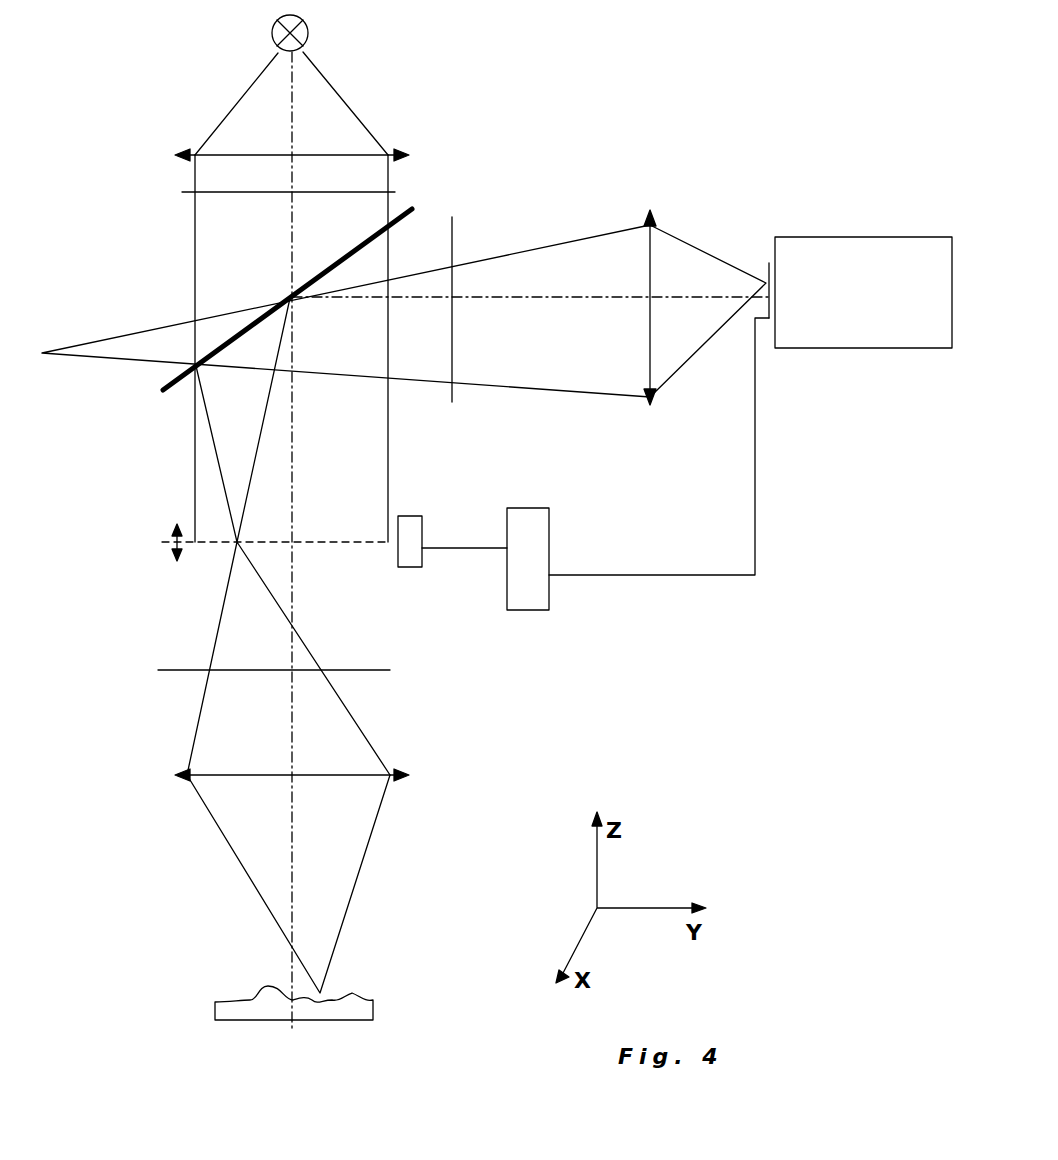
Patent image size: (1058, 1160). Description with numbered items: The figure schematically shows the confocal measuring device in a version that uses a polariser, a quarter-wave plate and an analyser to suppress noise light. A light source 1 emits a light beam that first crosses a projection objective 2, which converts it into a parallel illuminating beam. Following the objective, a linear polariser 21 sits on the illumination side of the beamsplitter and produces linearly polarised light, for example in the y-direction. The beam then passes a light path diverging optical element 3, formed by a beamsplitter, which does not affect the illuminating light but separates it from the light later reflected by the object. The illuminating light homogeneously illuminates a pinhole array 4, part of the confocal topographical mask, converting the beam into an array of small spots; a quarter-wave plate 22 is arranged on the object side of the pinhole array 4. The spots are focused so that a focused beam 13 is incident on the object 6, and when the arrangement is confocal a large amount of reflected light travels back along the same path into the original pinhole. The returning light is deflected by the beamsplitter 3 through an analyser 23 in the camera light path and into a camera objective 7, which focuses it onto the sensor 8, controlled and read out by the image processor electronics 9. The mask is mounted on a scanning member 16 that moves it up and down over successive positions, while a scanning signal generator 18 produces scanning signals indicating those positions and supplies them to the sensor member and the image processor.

The light source 1 is at (309, 33).
The projection objective 2 is at (388, 150).
The linear polariser 21 is at (396, 190).
The light path diverging optical element 3 is at (167, 384).
The analyser 23 is at (452, 403).
The camera objective 7 is at (648, 405).
The sensor 8 is at (766, 268).
The image processor electronics 9 is at (868, 310).
The scanning member 16 is at (412, 556).
The scanning signal generator 18 is at (530, 553).
The pinhole array 4 is at (375, 546).
The quarter-wave plate 22 is at (392, 670).
The focused beam 13 is at (238, 862).
The object 6 is at (368, 1007).